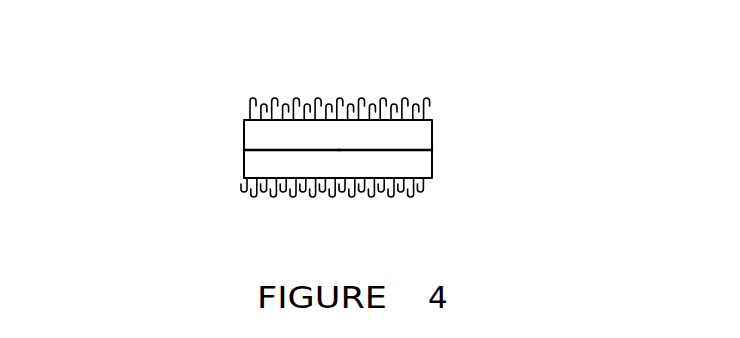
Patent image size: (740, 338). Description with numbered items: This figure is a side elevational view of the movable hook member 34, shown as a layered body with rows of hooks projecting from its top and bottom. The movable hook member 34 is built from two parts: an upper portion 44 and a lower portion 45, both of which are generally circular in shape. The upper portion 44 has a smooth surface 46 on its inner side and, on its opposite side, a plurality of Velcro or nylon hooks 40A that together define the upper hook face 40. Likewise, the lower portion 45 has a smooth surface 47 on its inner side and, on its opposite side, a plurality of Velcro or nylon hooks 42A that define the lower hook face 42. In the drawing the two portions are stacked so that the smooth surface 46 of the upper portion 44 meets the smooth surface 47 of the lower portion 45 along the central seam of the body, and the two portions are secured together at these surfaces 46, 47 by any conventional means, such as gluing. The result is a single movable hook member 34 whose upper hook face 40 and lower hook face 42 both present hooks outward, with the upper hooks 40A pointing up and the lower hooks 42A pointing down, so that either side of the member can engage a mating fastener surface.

The movable hook member 34 is at (150, 163).
The hook face 40 is at (430, 119).
The Velcro or nylon hooks 40A is at (227, 104).
The hook face 42 is at (246, 180).
The Velcro or nylon hooks 42A is at (443, 191).
The upper portion 44 is at (422, 133).
The lower portion 45 is at (256, 166).
The smooth surface 46 is at (266, 150).
The smooth surface 47 is at (405, 150).